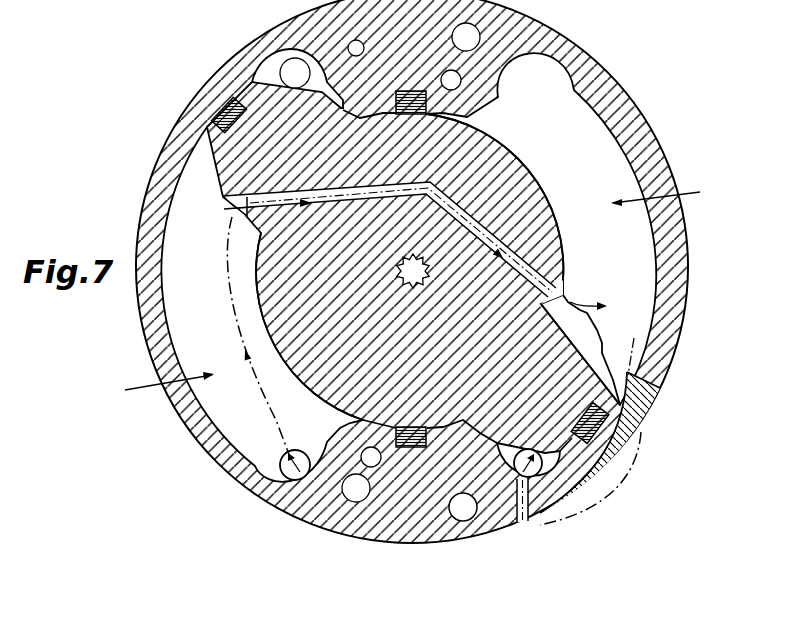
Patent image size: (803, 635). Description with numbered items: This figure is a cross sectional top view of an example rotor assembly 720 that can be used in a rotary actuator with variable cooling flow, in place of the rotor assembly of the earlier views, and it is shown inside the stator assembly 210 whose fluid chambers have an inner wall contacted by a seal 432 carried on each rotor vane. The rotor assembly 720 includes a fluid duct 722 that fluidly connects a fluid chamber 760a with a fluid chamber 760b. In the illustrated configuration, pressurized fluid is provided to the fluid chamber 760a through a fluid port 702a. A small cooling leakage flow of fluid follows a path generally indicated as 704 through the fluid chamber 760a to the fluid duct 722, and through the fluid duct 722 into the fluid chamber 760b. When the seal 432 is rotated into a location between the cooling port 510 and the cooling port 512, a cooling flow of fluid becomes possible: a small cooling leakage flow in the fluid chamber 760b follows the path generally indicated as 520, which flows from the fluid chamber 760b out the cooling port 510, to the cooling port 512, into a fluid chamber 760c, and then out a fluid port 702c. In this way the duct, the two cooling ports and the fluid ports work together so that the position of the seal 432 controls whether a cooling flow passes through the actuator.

The stator assembly 210 is at (613, 83).
The rotor assembly 720 is at (521, 156).
The fluid duct 722 is at (450, 197).
The fluid chamber 760a is at (220, 304).
The fluid chamber 760b is at (589, 229).
The fluid chamber 760c is at (497, 470).
The seal 432 is at (205, 132).
The path 704 is at (232, 299).
The fluid port 702a is at (282, 468).
The fluid port 702c is at (540, 470).
The cooling port 510 is at (626, 421).
The cooling port 512 is at (518, 518).
The path 520 is at (607, 482).